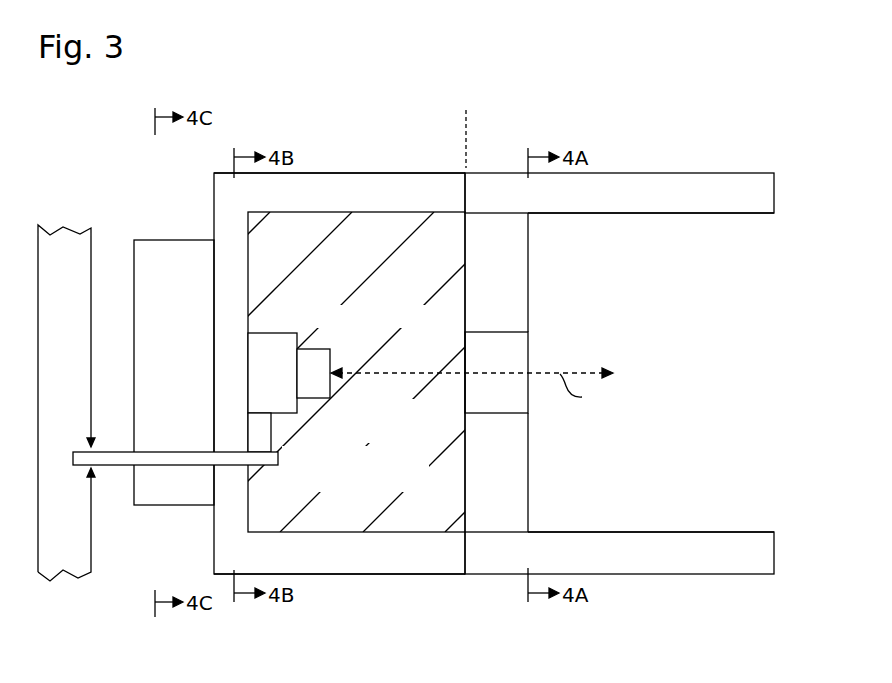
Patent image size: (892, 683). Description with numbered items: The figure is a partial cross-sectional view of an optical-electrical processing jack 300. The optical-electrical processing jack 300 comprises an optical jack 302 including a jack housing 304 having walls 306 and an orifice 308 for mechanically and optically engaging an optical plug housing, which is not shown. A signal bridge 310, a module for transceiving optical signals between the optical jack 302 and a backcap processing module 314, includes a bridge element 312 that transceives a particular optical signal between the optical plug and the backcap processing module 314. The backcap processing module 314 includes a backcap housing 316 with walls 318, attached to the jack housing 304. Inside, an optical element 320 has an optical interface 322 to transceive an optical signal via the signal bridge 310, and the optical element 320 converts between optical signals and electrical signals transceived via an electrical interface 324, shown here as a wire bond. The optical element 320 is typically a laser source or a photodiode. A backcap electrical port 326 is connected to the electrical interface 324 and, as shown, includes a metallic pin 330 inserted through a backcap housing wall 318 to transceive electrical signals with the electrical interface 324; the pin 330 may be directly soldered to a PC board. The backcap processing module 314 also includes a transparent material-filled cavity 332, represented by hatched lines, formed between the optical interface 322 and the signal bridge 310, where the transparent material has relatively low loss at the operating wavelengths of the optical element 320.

The optical-electrical processing jack 300 is at (114, 620).
The optical jack 302 is at (636, 144).
The jack housing 304 is at (758, 158).
The walls 306 is at (619, 373).
The orifice 308 is at (788, 433).
The signal bridge 310 is at (528, 306).
The bridge element 312 is at (496, 372).
The backcap processing module 314 is at (343, 146).
The backcap housing 316 is at (431, 584).
The walls 318 is at (339, 373).
The optical element 320 is at (276, 326).
The optical interface 322 is at (319, 398).
The electrical interface 324 is at (271, 430).
The backcap electrical port 326 is at (194, 240).
The pin 330 is at (174, 452).
The transparent material-filled cavity 332 is at (373, 234).